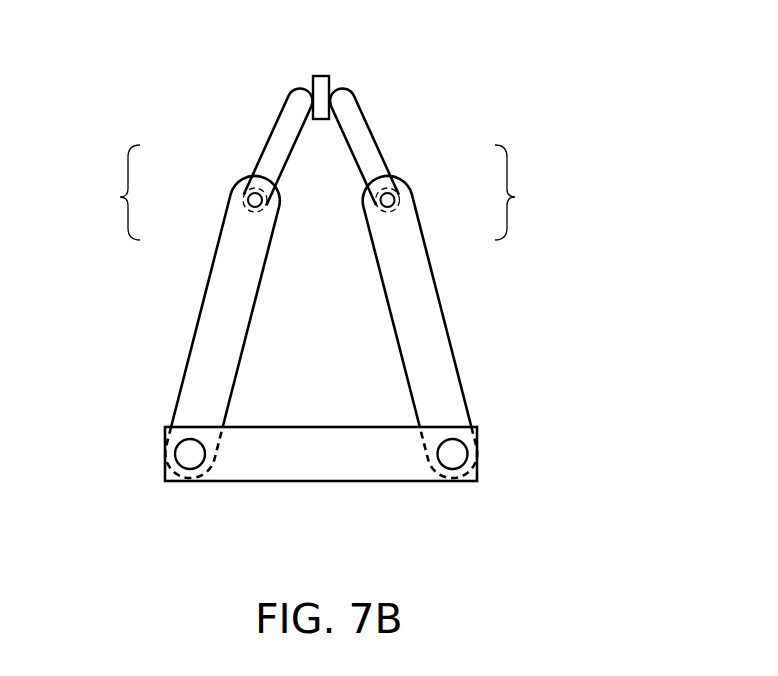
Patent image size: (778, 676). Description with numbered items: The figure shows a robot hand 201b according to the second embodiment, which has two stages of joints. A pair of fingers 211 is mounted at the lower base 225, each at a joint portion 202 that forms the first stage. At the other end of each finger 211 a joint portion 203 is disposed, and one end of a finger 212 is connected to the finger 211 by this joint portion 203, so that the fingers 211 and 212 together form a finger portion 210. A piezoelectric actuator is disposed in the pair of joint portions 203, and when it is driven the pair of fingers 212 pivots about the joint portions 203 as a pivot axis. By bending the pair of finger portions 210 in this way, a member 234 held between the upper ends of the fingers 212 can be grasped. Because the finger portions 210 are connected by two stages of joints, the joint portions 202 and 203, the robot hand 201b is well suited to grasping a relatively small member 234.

The robot hand 201b is at (531, 86).
The joint portion 202 is at (176, 452).
The joint portion 203 is at (257, 208).
The finger portion 210 is at (318, 192).
The finger 211 is at (237, 218).
The finger 212 is at (270, 158).
The base 225 is at (322, 470).
The member 234 is at (320, 79).